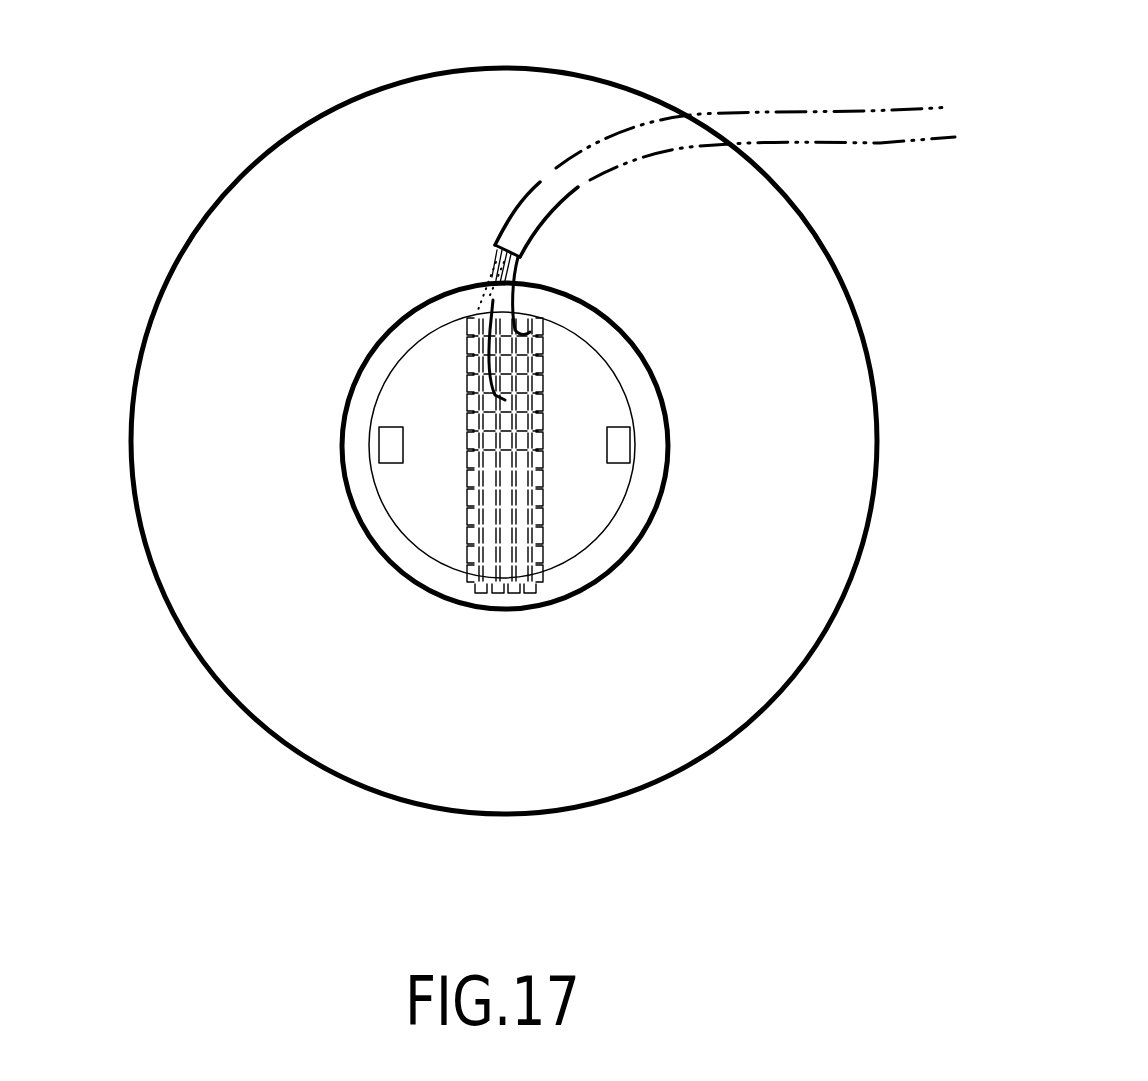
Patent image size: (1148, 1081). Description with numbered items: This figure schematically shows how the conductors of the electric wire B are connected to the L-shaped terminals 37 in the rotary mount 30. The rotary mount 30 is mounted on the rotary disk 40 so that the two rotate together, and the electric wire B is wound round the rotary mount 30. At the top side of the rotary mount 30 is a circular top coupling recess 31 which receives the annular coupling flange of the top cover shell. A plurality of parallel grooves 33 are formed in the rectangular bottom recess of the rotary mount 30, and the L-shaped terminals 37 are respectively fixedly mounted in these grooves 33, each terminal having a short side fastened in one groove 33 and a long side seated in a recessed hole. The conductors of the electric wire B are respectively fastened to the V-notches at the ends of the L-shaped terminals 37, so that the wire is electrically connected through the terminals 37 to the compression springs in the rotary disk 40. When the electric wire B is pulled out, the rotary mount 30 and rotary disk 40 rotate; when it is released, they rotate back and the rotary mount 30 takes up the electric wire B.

The rotary disk 40 is at (293, 175).
The rotary mount 30 is at (362, 378).
The circular top coupling recess 31 is at (408, 490).
The parallel grooves 33 is at (525, 483).
The L-shaped terminals 37 is at (542, 326).
The electric wire B is at (840, 128).